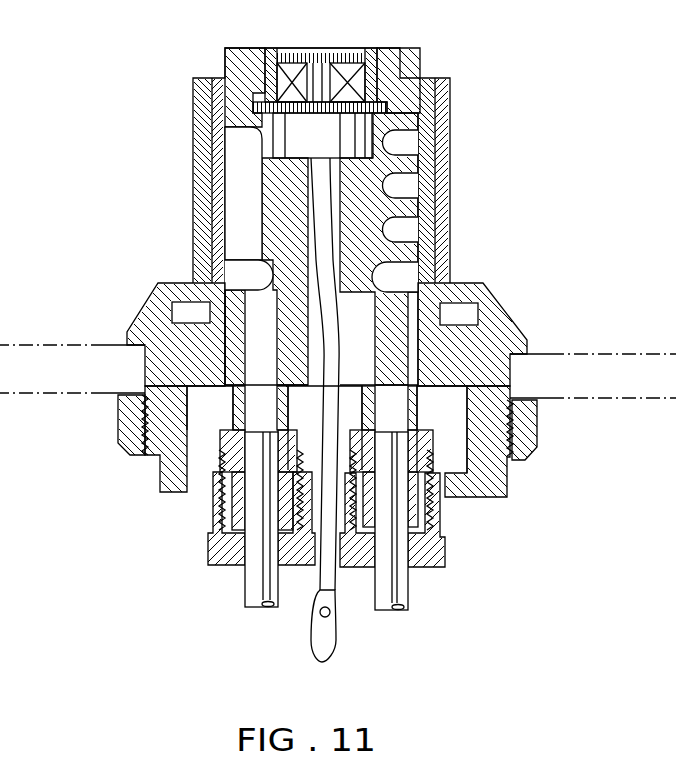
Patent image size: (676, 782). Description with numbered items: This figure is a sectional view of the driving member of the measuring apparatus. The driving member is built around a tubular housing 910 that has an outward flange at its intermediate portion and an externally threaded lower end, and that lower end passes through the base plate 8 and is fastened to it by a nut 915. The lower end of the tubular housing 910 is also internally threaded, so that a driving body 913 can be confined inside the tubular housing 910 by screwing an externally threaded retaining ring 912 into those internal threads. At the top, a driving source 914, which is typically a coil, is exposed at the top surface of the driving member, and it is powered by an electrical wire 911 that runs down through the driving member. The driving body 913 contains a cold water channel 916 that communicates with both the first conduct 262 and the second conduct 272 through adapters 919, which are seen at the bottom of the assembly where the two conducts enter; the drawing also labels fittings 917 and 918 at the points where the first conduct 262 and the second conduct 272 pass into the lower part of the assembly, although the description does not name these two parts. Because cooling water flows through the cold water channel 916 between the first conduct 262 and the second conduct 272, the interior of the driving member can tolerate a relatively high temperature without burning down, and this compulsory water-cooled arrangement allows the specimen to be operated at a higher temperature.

The base plate 8 is at (573, 352).
The tubular housing 910 is at (440, 218).
The electrical wire 911 is at (325, 238).
The retaining ring 912 is at (495, 478).
The driving body 913 is at (457, 350).
The driving source 914 is at (348, 68).
The nut 915 is at (533, 425).
The cold water channel 916 is at (240, 178).
The sleeve fitting 917 is at (247, 432).
The sleeve fitting 918 is at (413, 413).
The adapters 919 is at (210, 548).
The first conduct 262 is at (258, 585).
The second conduct 272 is at (408, 588).